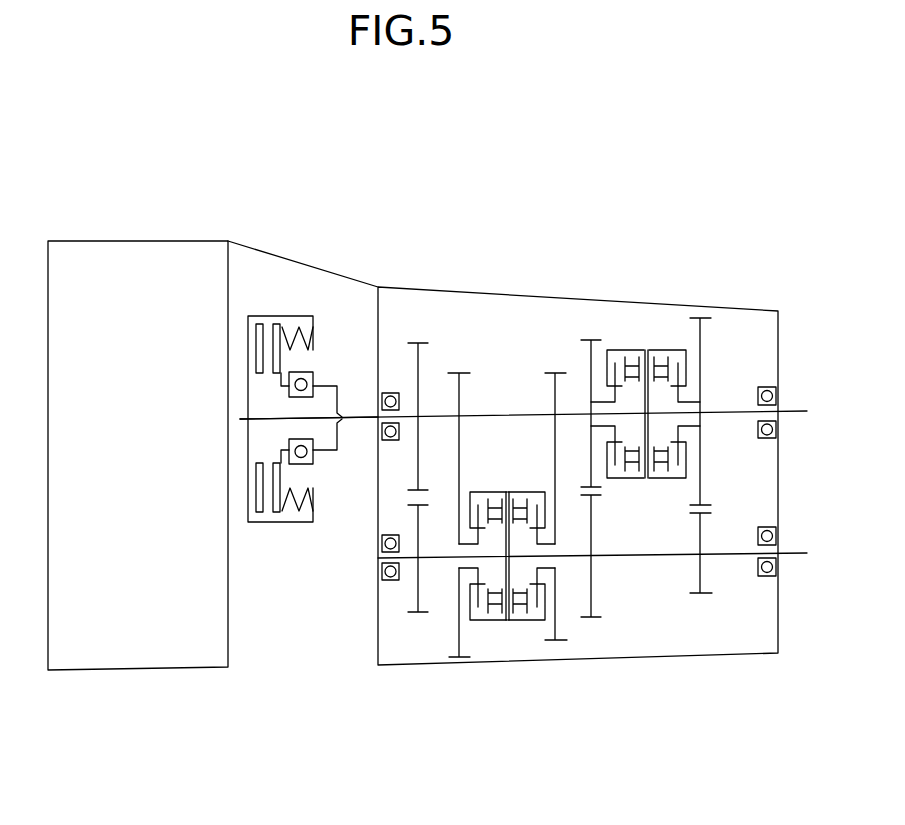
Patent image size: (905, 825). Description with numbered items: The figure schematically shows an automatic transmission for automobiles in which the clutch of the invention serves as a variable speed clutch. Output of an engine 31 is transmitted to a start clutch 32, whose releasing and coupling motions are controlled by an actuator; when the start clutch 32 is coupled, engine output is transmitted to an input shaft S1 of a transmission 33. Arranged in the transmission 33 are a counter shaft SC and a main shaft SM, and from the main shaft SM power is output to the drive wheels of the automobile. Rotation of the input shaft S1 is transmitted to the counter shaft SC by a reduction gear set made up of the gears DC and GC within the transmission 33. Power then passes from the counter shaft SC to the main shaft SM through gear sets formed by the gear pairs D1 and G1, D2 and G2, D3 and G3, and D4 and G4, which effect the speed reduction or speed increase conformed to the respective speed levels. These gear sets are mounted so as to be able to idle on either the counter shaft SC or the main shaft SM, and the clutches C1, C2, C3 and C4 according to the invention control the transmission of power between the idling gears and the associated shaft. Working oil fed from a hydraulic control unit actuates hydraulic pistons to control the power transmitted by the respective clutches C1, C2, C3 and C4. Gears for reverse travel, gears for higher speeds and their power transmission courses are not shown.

The engine 31 is at (148, 241).
The start clutch 32 is at (259, 316).
The transmission 33 is at (497, 293).
The input shaft S1 is at (356, 417).
The main shaft SM is at (733, 411).
The counter shaft SC is at (748, 556).
The reduction gear DC is at (418, 343).
The reduction gear GC is at (415, 615).
The first speed gear G1 is at (700, 318).
The second speed gear G2 is at (591, 340).
The third speed gear G3 is at (556, 373).
The fourth speed gear G4 is at (458, 373).
The clutch C1 is at (658, 348).
The clutch C2 is at (623, 348).
The clutch C3 is at (520, 623).
The clutch C4 is at (488, 623).
The first speed gear D1 is at (696, 596).
The second speed gear D2 is at (594, 620).
The third speed gear D3 is at (555, 643).
The fourth speed gear D4 is at (458, 660).